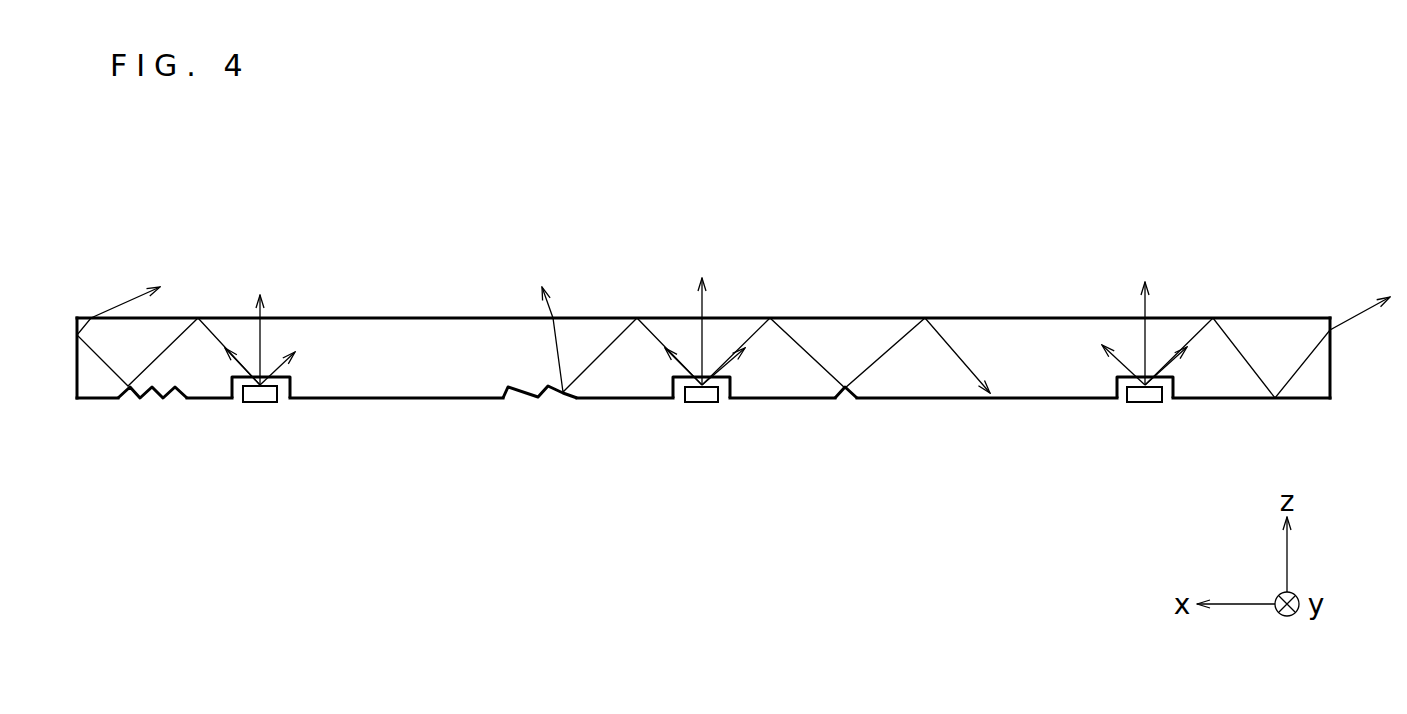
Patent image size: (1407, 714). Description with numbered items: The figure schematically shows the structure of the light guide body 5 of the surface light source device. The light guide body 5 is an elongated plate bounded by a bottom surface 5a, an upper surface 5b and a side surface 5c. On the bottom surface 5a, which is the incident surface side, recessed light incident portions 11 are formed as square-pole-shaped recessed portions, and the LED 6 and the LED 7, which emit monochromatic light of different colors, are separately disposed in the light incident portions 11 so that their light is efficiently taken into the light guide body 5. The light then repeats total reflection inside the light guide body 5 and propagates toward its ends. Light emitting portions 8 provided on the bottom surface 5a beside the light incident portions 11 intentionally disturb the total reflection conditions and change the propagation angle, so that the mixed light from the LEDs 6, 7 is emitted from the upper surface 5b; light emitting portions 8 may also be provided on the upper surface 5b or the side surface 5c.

The light guide body 5 is at (732, 341).
The bottom surface 5a is at (950, 400).
The upper surface 5b is at (1007, 318).
The side surface 5c is at (1330, 370).
The LED 6 is at (252, 403).
The LED 7 is at (695, 403).
The light emitting portion 8 is at (505, 402).
The light incident portion 11 is at (289, 385).